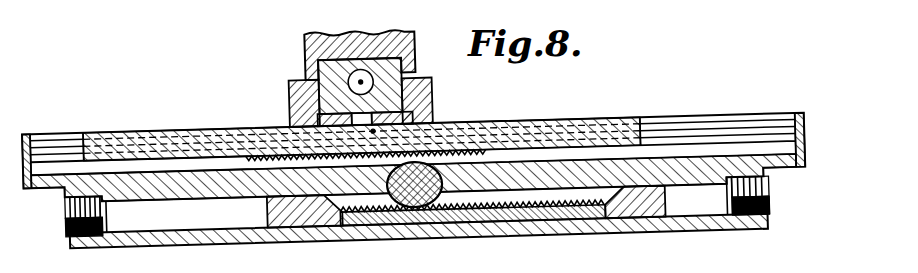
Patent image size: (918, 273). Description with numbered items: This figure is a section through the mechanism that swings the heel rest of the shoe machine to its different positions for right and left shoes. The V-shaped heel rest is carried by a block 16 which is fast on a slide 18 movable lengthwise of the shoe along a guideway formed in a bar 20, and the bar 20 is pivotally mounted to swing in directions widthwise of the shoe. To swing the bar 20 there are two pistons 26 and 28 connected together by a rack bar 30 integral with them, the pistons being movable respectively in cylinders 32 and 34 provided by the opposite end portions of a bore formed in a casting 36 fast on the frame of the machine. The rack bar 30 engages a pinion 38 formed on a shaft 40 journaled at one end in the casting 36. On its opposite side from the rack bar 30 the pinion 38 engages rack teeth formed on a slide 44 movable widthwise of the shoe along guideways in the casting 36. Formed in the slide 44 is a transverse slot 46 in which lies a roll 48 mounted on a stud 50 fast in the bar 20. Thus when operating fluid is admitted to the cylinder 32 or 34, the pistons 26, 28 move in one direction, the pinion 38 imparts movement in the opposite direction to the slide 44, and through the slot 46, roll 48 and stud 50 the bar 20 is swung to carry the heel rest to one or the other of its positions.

The block 16 is at (390, 45).
The slide 18 is at (418, 73).
The bar 20 is at (435, 105).
The piston 26 is at (282, 225).
The piston 28 is at (620, 222).
The rack bar 30 is at (485, 225).
The cylinder 32 is at (172, 233).
The cylinder 34 is at (704, 231).
The casting 36 is at (116, 245).
The pinion 38 is at (428, 201).
The shaft 40 is at (385, 223).
The slide 44 is at (548, 137).
The transverse slot 46 is at (415, 130).
The roll 48 is at (348, 132).
The stud 50 is at (351, 121).